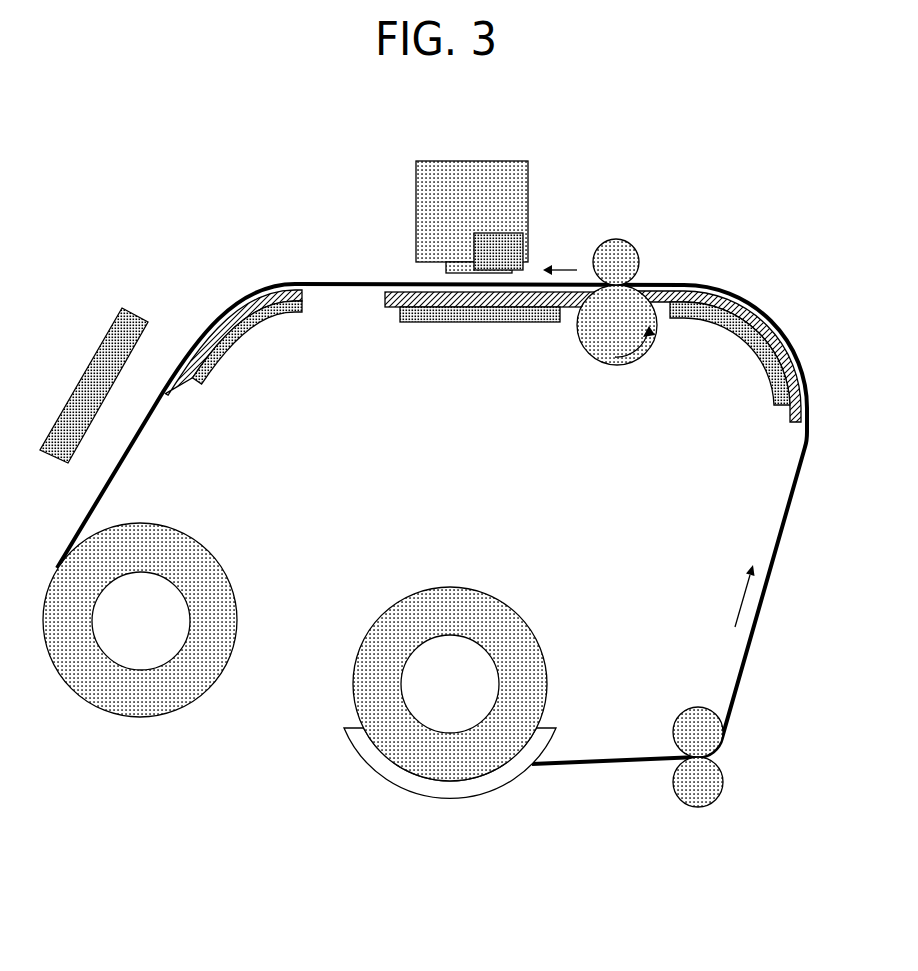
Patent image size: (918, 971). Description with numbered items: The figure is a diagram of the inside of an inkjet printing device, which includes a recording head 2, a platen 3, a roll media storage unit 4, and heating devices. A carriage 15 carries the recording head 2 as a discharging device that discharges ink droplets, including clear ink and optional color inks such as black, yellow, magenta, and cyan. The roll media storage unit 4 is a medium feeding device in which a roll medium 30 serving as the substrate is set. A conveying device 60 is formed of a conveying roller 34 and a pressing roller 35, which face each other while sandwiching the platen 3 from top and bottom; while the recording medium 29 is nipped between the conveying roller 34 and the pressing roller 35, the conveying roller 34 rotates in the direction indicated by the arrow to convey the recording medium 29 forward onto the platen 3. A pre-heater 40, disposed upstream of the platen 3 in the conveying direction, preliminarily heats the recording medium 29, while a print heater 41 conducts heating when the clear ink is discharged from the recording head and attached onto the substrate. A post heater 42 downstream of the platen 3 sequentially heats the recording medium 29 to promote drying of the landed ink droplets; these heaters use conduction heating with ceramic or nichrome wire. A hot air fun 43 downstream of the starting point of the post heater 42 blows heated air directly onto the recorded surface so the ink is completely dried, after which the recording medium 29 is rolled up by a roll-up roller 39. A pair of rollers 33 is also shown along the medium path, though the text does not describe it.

The recording head 2 is at (460, 267).
The platen 3 is at (392, 308).
The roll media storage unit 4 is at (364, 588).
The carriage 15 is at (498, 161).
The recording medium 29 is at (780, 535).
The roll medium 30 is at (498, 602).
The conveying roller pair 33 is at (680, 762).
The conveying roller 34 is at (617, 365).
The pressing roller 35 is at (616, 240).
The roll-up roller 39 is at (165, 577).
The pre-heater 40 is at (728, 333).
The print heater 41 is at (485, 323).
The post heater 42 is at (247, 317).
The hot air fun 43 is at (122, 308).
The conveying device 60 is at (652, 267).